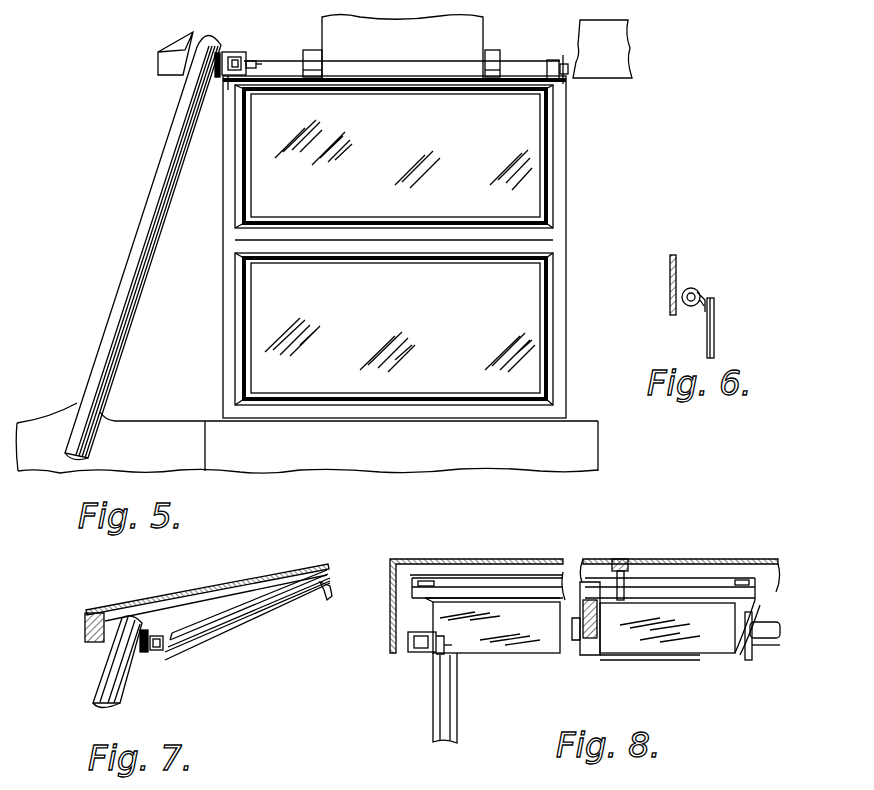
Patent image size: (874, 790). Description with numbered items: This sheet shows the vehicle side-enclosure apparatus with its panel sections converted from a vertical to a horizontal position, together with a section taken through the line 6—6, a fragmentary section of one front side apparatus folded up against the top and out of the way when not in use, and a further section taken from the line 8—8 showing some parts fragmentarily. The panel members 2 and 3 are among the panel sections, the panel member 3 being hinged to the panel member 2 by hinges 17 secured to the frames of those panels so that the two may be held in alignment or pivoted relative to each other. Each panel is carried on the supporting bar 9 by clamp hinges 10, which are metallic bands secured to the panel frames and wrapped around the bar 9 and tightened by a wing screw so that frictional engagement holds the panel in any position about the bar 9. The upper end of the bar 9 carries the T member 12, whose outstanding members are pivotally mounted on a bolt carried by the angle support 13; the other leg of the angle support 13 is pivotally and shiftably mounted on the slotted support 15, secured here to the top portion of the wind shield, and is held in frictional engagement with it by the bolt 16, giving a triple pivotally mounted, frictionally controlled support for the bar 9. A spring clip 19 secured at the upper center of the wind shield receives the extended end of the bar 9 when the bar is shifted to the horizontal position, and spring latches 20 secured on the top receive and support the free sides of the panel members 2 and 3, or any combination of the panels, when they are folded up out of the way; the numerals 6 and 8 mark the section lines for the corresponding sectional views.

In FIG. 5, the panel member 2 is at (394, 156).
In FIG. 7, the panel member 2 is at (205, 648).
In FIG. 8, the panel member 2 is at (507, 648).
In FIG. 5, the panel member 3 is at (394, 329).
In FIG. 7, the panel member 3 is at (246, 631).
In FIG. 8, the panel member 3 is at (530, 578).
In FIG. 5, the panel section 6 is at (621, 70).
In FIG. 7, the panel section 8 is at (320, 610).
In FIG. 5, the supporting bar 9 is at (252, 64).
In FIG. 8, the supporting bar 9 is at (448, 655).
In FIG. 5, the clamp hinge 10 is at (234, 78).
In FIG. 8, the clamp hinge 10 is at (438, 652).
In FIG. 5, the T member 12 is at (238, 56).
In FIG. 7, the T member 12 is at (152, 651).
In FIG. 8, the T member 12 is at (422, 650).
In FIG. 5, the angle support 13 is at (224, 52).
In FIG. 7, the angle support 13 is at (152, 642).
In FIG. 8, the angle support 13 is at (410, 642).
In FIG. 5, the slotted support 15 is at (210, 58).
In FIG. 7, the slotted support 15 is at (140, 618).
In FIG. 5, the bolt 16 is at (215, 64).
In FIG. 7, the bolt 16 is at (160, 634).
In FIG. 8, the hinge 17 is at (432, 582).
In FIG. 8, the clip 19 is at (748, 660).
In FIG. 5, the support 20 is at (560, 62).
In FIG. 6, the support 20 is at (703, 300).
In FIG. 7, the support 20 is at (333, 586).
In FIG. 8, the support 20 is at (624, 584).